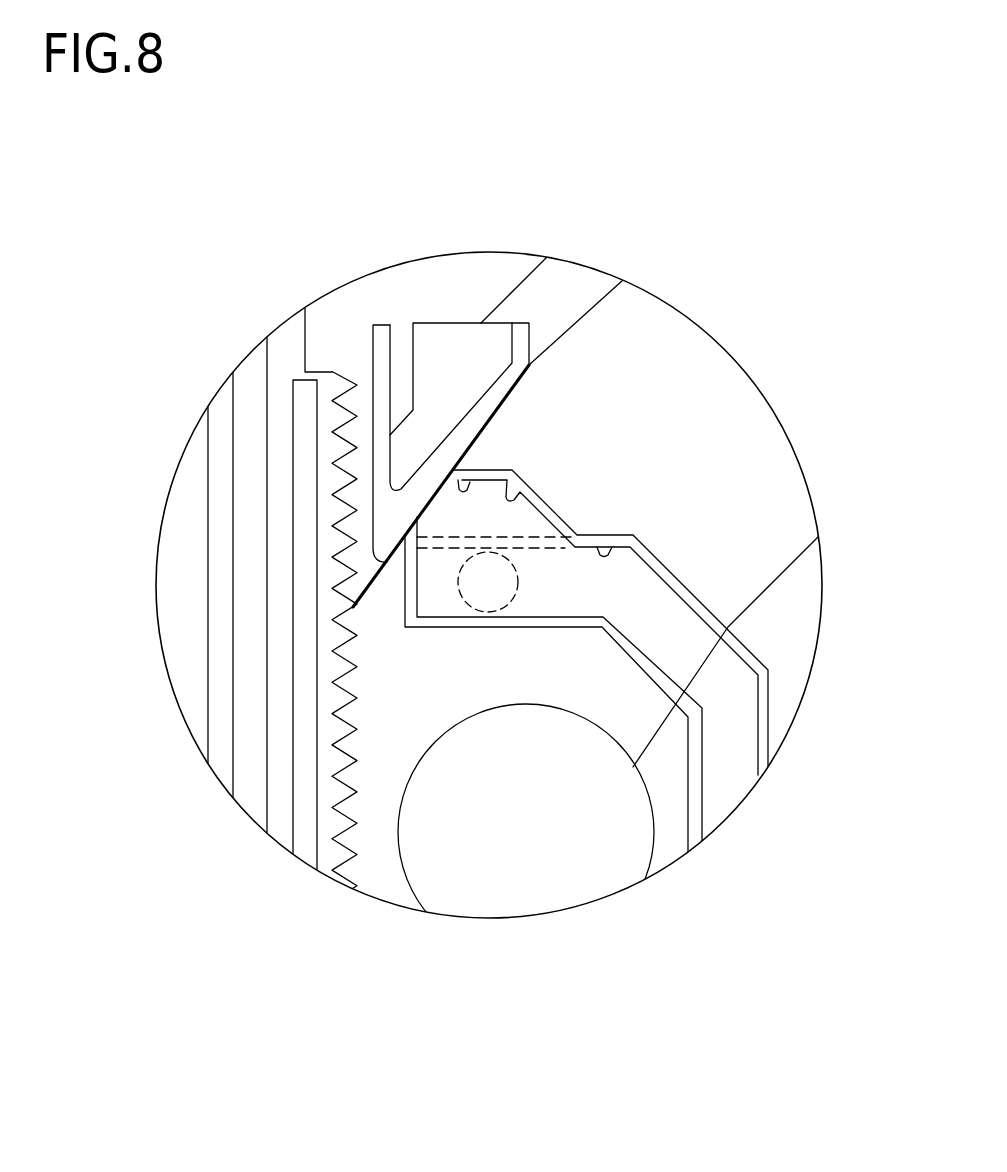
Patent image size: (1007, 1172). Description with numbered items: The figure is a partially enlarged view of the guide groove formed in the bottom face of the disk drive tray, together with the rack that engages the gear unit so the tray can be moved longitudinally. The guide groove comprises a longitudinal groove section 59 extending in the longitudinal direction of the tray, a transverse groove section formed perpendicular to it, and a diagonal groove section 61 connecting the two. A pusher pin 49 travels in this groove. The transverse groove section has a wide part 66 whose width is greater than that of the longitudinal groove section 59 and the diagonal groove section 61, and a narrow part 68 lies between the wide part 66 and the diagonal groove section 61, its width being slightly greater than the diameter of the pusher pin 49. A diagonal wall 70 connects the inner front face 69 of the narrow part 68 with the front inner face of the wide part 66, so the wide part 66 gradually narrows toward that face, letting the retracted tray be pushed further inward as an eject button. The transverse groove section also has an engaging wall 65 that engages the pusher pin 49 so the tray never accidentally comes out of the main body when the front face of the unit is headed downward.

The pusher pin 49 is at (567, 590).
The longitudinal groove section 59 is at (730, 770).
The diagonal groove section 61 is at (663, 607).
The engaging wall 65 is at (538, 606).
The wide part 66 is at (433, 517).
The narrow part 68 is at (622, 537).
The inner front face 69 is at (633, 535).
The diagonal wall 70 is at (518, 478).